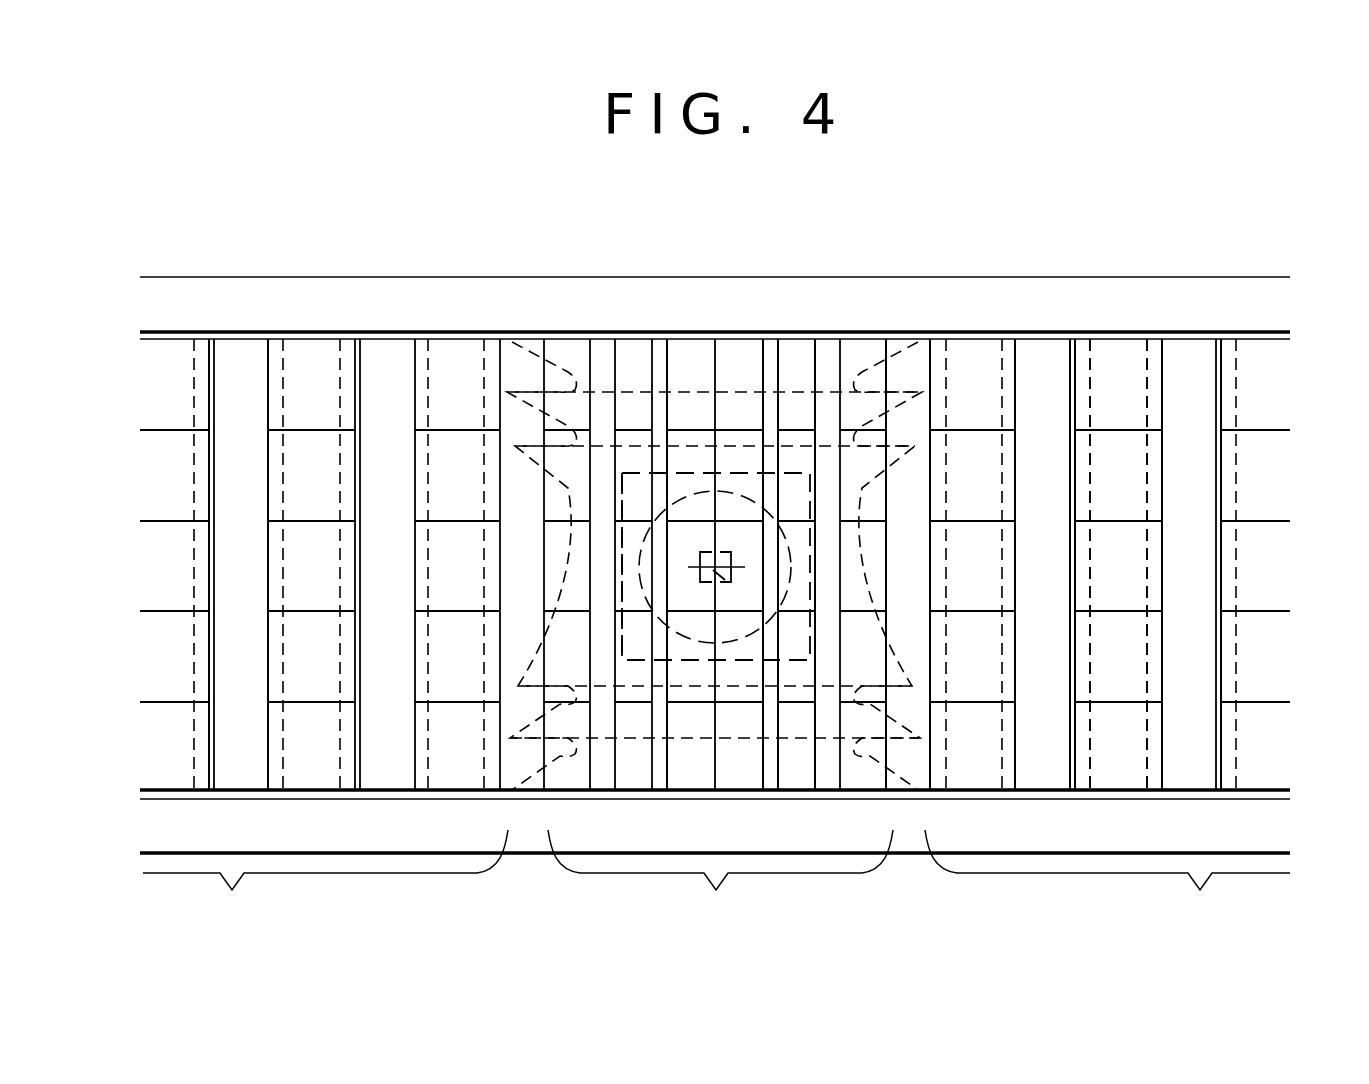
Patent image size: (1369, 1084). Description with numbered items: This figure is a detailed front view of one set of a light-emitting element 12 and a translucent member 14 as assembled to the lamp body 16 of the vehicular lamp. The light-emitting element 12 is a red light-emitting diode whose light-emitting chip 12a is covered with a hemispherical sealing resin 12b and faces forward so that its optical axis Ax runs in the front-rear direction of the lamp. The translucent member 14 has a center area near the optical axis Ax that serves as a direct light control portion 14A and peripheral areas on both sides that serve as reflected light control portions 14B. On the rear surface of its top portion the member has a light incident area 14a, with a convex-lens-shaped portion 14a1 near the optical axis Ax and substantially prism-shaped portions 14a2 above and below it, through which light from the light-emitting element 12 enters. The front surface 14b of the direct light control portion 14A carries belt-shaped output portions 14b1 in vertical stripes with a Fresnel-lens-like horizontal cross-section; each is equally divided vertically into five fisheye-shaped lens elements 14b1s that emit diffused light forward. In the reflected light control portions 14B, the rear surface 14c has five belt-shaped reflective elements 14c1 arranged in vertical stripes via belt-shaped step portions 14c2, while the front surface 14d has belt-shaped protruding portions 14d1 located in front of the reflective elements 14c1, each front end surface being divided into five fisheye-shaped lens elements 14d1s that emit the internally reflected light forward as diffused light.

The translucent member 14 is at (237, 330).
The lamp body 16 is at (297, 272).
The front surface of the reflected light control portion 14d is at (300, 569).
The belt-shaped protruding portion 14d1 is at (222, 405).
The lens element 14d1s is at (300, 742).
The lens element 14b1s is at (555, 557).
The belt-shaped output portion 14b1 is at (567, 353).
The light incident area 14a is at (737, 407).
The front surface of the direct light control portion 14b is at (797, 402).
The portion of the light incident area 14a2 is at (920, 408).
The belt-shaped reflective element 14c1 is at (1115, 462).
The rear surface of the reflected light control portion 14c is at (1128, 503).
The belt-shaped step portion 14c2 is at (1043, 560).
The portion of the light incident area 14a1 is at (867, 580).
The light-emitting element 12 is at (695, 465).
The sealing resin 12b is at (630, 635).
The light-emitting chip 12a is at (698, 578).
The optical axis Ax is at (717, 570).
The direct light control portion 14A is at (720, 879).
The reflected light control portion 14B is at (716, 879).